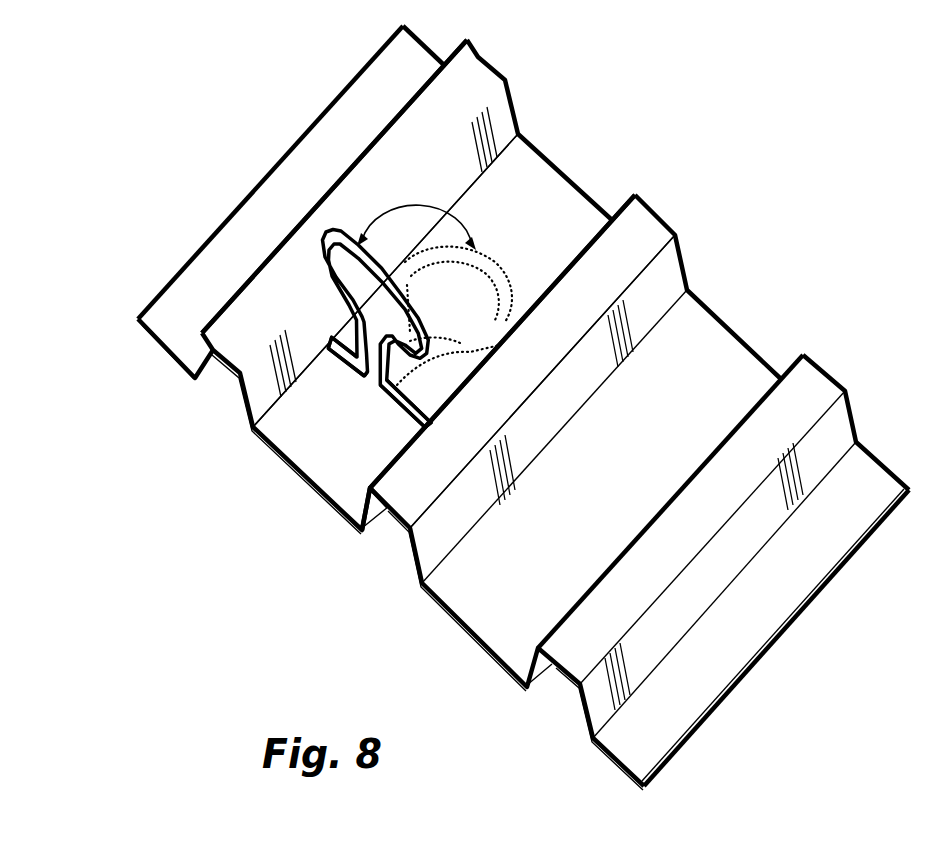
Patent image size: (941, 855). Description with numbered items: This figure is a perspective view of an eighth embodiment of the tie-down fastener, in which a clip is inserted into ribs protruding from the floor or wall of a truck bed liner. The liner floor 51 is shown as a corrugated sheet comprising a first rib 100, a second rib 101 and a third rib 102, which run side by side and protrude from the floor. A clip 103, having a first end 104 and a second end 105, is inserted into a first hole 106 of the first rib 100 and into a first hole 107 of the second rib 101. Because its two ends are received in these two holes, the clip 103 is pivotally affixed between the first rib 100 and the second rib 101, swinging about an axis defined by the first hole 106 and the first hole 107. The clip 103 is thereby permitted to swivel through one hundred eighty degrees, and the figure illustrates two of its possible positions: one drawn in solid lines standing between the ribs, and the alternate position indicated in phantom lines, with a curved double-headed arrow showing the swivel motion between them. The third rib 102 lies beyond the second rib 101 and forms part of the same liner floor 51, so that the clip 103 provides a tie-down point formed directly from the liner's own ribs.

The liner floor 51 is at (735, 325).
The first rib 100 is at (199, 326).
The second rib 101 is at (648, 226).
The third rib 102 is at (718, 572).
The clip 103 is at (367, 202).
The first end 104 is at (318, 338).
The second end 105 is at (378, 503).
The first hole 106 is at (356, 376).
The first hole 107 is at (388, 409).